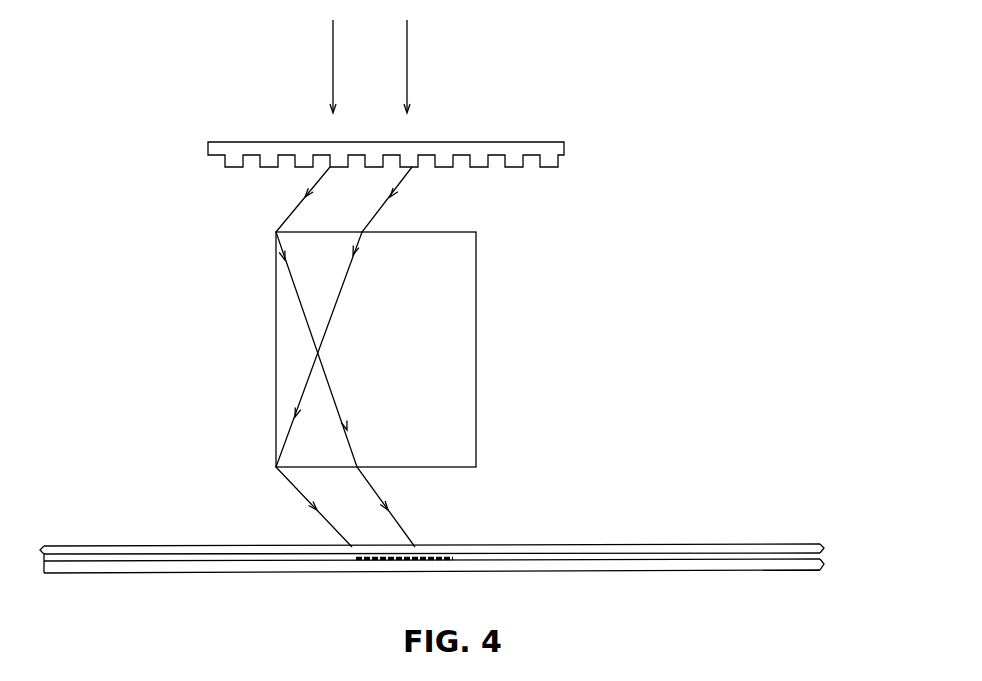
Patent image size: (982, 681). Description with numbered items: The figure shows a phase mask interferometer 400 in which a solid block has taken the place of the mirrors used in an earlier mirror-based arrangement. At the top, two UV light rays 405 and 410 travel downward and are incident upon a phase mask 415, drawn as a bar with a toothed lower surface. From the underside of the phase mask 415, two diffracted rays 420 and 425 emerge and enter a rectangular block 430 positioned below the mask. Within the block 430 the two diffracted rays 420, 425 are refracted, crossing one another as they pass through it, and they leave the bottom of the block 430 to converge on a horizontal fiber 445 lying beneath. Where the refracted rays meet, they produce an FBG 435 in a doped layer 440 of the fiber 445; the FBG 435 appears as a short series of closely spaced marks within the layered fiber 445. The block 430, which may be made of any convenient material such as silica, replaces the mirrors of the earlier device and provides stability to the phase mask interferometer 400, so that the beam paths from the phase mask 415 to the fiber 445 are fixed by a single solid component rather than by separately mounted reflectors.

The phase mask interferometer 400 is at (675, 70).
The UV light ray 405 is at (333, 58).
The UV light ray 410 is at (407, 43).
The phase mask 415 is at (520, 141).
The diffracted ray 420 is at (290, 212).
The diffracted ray 425 is at (400, 183).
The block 430 is at (476, 302).
The FBG 435 is at (385, 563).
The doped layer 440 is at (817, 557).
The fiber 445 is at (700, 520).